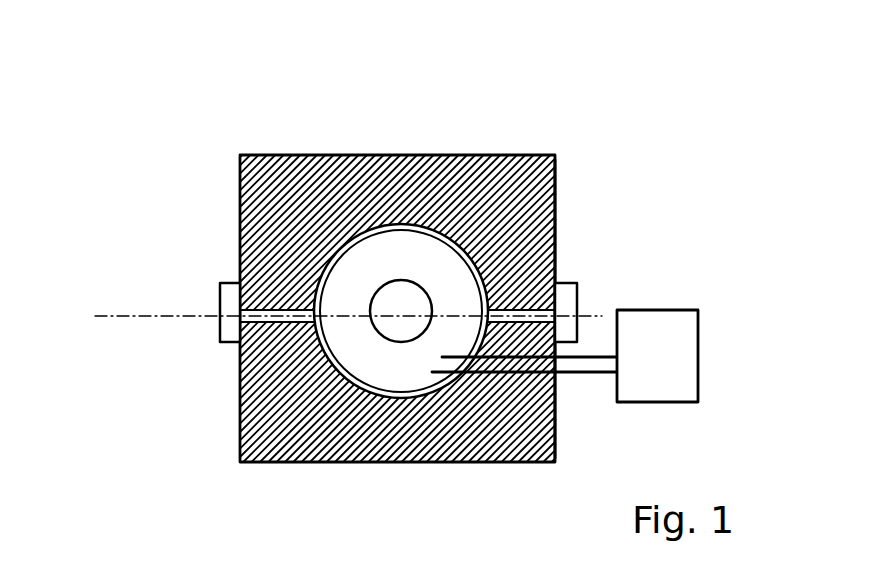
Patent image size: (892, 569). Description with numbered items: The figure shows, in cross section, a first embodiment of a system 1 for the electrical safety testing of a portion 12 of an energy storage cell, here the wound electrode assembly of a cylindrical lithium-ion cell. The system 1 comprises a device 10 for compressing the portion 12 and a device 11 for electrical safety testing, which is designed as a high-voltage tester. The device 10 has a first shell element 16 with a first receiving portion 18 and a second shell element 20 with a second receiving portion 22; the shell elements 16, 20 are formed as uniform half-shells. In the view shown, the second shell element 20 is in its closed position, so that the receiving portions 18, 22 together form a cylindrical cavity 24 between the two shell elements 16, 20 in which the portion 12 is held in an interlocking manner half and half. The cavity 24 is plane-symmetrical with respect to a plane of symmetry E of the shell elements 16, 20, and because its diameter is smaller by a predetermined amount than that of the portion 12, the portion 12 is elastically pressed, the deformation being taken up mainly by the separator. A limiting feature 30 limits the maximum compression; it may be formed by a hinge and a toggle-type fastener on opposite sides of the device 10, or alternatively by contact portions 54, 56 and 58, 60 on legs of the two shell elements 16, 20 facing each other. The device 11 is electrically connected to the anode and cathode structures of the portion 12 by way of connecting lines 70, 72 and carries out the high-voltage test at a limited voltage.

The system 1 is at (628, 118).
The device for compressing 10 is at (437, 143).
The device for electrical safety testing 11 is at (680, 262).
The portion of an energy storage cell 12 is at (393, 247).
The first shell element 16 is at (240, 423).
The first receiving portion 18 is at (388, 406).
The second shell element 20 is at (240, 227).
The second receiving portion 22 is at (335, 258).
The cylindrical cavity 24 is at (457, 392).
The limiting feature 30 is at (220, 330).
The contact portion 54 is at (500, 366).
The contact portion 56 is at (557, 197).
The contact portion 58 is at (283, 322).
The contact portion 60 is at (289, 308).
The connecting line 70 is at (583, 360).
The connecting line 72 is at (567, 374).
The plane of symmetry E is at (145, 317).